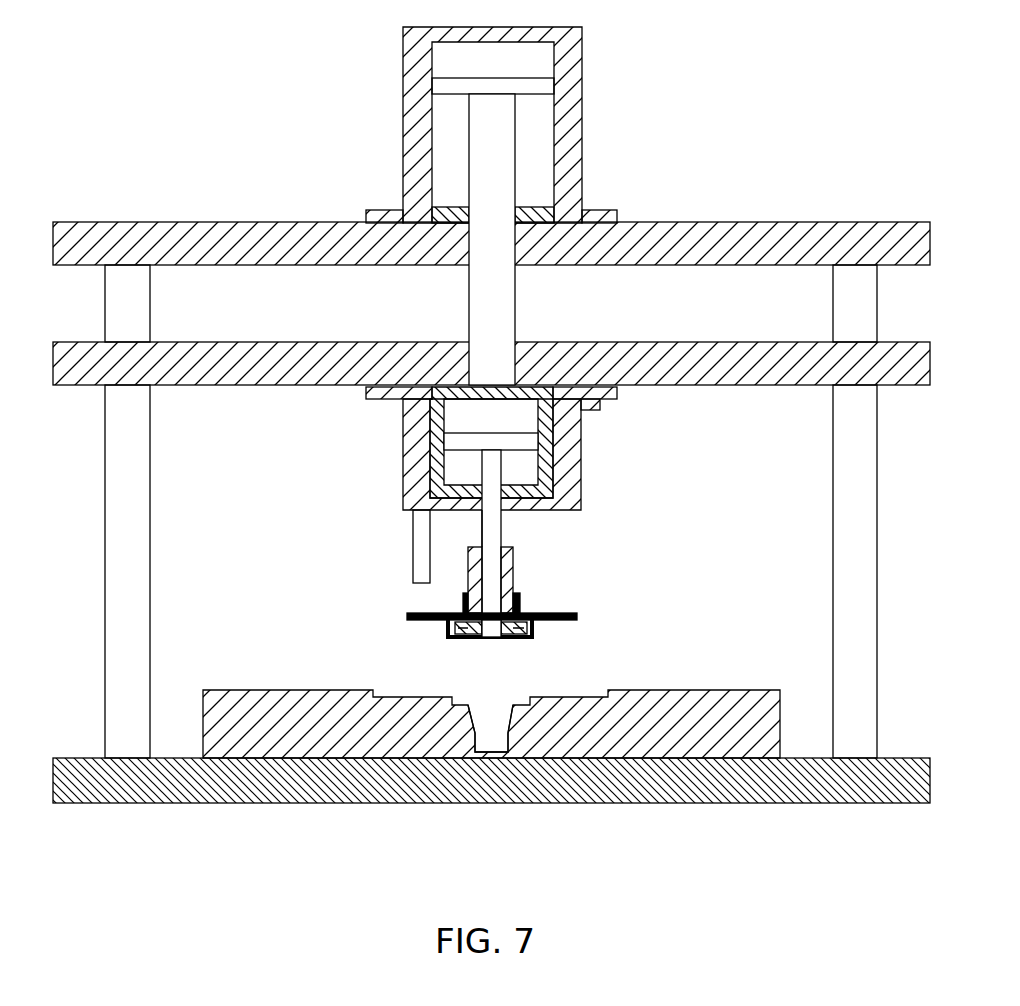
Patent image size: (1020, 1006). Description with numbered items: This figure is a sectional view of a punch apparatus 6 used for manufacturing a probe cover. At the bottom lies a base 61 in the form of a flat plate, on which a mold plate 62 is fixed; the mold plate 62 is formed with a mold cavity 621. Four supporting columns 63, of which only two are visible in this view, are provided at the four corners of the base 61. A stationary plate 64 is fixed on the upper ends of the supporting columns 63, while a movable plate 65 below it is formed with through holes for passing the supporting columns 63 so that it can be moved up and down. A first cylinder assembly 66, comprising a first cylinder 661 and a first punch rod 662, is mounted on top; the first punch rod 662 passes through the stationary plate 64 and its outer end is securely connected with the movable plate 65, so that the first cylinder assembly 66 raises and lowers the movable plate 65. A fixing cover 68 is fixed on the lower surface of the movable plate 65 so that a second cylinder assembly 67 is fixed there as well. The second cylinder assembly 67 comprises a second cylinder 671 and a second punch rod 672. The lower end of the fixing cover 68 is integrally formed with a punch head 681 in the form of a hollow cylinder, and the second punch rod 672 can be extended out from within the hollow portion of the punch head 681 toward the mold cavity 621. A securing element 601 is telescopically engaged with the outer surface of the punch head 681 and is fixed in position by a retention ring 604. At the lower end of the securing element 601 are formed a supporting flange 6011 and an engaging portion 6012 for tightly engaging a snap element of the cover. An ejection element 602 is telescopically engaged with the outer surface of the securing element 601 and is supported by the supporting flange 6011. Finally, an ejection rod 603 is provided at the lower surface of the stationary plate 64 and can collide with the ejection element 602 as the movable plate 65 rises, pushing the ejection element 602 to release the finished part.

The punch apparatus 6 is at (733, 167).
The base 61 is at (375, 796).
The mold plate 62 is at (205, 740).
The mold cavity 621 is at (500, 705).
The supporting columns 63 is at (135, 505).
The stationary plate 64 is at (140, 232).
The movable plate 65 is at (232, 352).
The first cylinder assembly 66 is at (530, 206).
The first cylinder 661 is at (566, 145).
The first punch rod 662 is at (505, 310).
The second cylinder assembly 67 is at (531, 512).
The second cylinder 671 is at (582, 420).
The second punch rod 672 is at (501, 537).
The fixing cover 68 is at (582, 487).
The punch head 681 is at (480, 537).
The securing element 601 is at (513, 578).
The supporting flange 6011 is at (446, 615).
The engaging portion 6012 is at (456, 633).
The ejection element 602 is at (565, 612).
The ejection rod 603 is at (418, 560).
The retention ring 604 is at (478, 638).